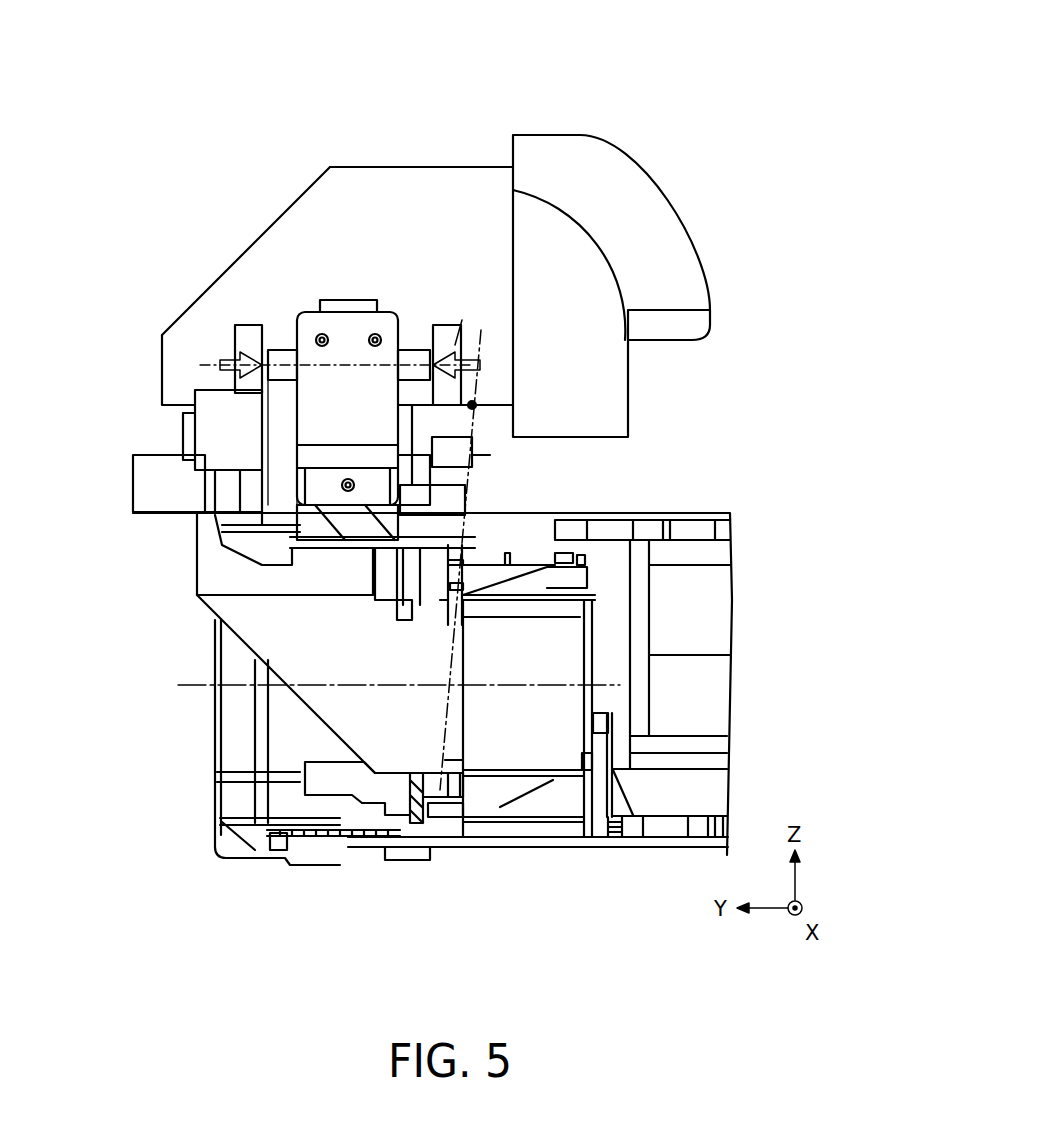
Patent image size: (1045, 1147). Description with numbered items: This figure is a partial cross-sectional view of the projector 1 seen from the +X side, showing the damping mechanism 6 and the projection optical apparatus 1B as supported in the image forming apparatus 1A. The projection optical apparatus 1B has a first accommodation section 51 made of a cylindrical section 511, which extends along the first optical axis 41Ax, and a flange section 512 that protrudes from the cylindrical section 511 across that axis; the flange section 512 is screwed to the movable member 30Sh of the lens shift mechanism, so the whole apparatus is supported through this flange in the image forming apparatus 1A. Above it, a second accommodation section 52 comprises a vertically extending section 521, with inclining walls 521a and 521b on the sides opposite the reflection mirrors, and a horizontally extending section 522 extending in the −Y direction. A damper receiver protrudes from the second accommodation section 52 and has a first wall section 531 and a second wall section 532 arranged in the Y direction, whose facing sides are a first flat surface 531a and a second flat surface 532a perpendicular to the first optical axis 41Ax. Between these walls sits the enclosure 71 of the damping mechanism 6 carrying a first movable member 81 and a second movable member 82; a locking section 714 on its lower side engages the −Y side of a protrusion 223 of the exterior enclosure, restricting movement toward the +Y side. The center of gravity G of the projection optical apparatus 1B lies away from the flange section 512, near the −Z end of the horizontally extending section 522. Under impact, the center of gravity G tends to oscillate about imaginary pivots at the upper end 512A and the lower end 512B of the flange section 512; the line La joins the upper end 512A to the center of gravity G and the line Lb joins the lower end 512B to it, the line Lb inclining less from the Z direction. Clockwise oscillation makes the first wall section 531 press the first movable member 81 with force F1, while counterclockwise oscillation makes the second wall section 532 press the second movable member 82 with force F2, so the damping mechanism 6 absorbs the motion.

The projector 1 is at (746, 65).
The image forming apparatus 1A is at (745, 628).
The projection optical apparatus 1B is at (655, 175).
The second accommodation section 52 is at (296, 489).
The vertically extending section 521 is at (197, 530).
The inclining wall 521a is at (267, 730).
The inclining wall 521b is at (290, 205).
The horizontally extending section 522 is at (445, 170).
The first wall section 531 is at (248, 330).
The first flat surface 531a is at (195, 398).
The second wall section 532 is at (445, 330).
The second flat surface 532a is at (420, 408).
The first movable member 81 is at (285, 350).
The second movable member 82 is at (420, 350).
The damping mechanism 6 is at (340, 300).
The enclosure 71 is at (355, 330).
The locking section 714 is at (320, 540).
The protrusion 223 is at (300, 560).
The first accommodation section 51 is at (505, 850).
The cylindrical section 511 is at (560, 840).
The flange section 512 is at (437, 620).
The upper end of flange section 512A is at (402, 617).
The lower end of flange section 512B is at (418, 825).
The movable member 30Sh is at (465, 820).
The first optical axis 41Ax is at (505, 685).
The center of gravity G is at (478, 402).
The line La is at (478, 345).
The line Lb is at (462, 320).
The force F1 is at (227, 358).
The force F2 is at (471, 365).